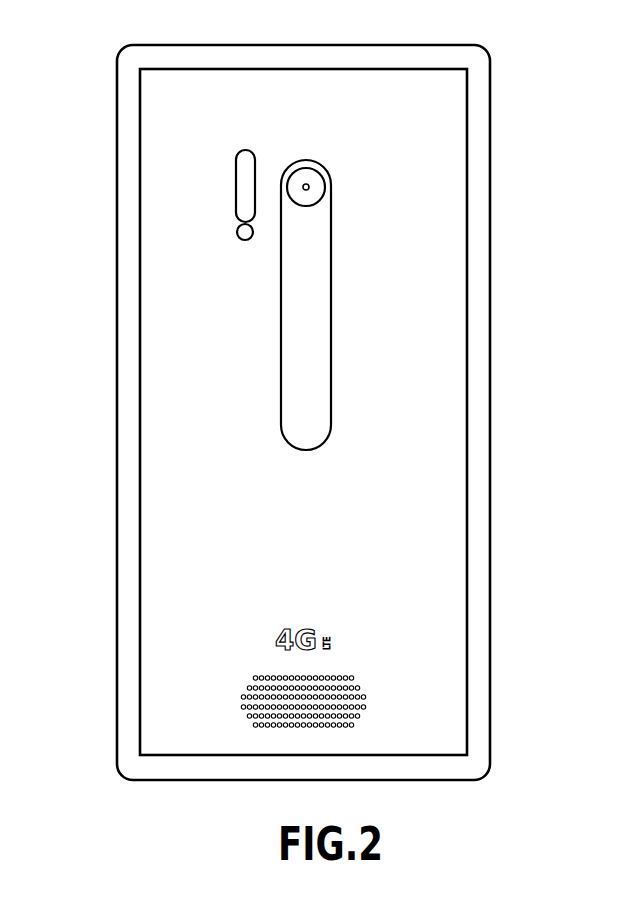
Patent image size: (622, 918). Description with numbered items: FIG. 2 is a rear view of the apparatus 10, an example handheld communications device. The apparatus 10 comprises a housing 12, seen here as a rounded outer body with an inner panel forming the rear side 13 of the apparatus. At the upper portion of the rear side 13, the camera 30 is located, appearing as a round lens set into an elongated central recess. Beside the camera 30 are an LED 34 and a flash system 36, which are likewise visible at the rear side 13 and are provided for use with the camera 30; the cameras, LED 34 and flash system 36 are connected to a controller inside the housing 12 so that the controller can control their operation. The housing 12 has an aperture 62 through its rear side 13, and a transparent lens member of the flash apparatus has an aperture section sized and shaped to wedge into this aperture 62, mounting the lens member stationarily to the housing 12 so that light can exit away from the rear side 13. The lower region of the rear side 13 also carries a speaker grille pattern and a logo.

The apparatus 10 is at (530, 113).
The housing 12 is at (475, 302).
The rear side 13 is at (450, 393).
The camera 30 is at (312, 184).
The LED 34 is at (237, 229).
The flash system 36 is at (243, 197).
The aperture 62 is at (234, 166).